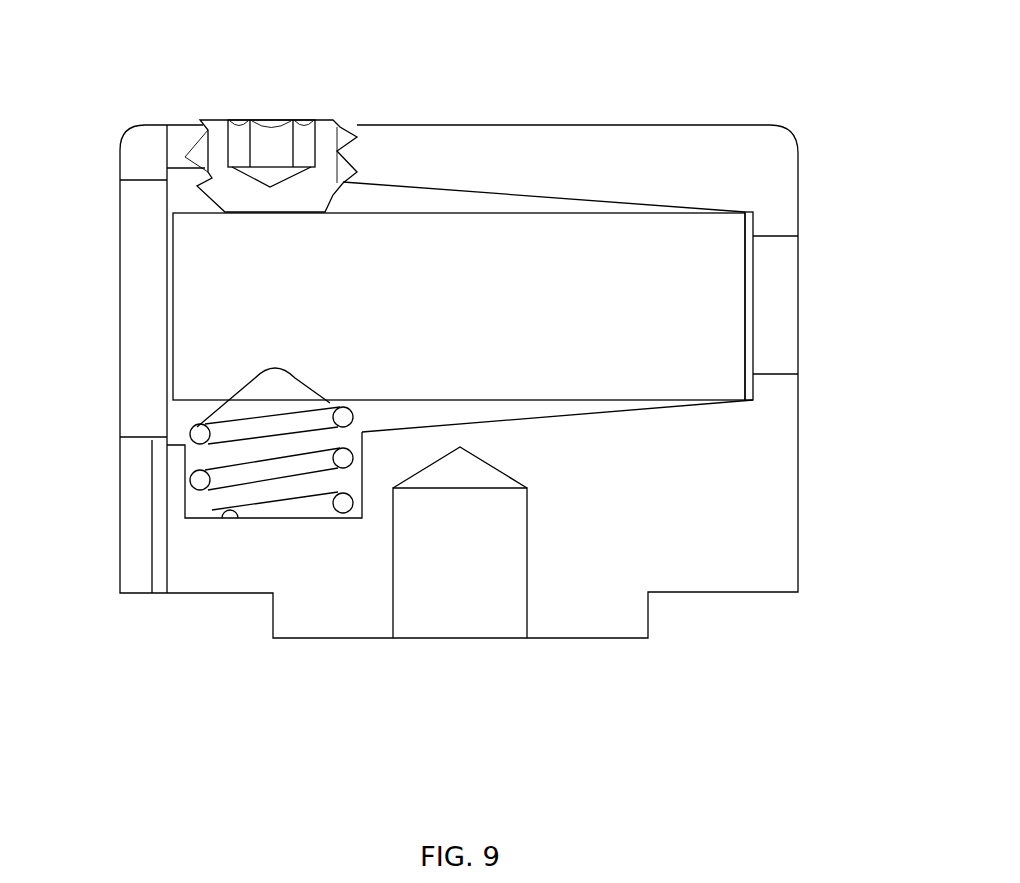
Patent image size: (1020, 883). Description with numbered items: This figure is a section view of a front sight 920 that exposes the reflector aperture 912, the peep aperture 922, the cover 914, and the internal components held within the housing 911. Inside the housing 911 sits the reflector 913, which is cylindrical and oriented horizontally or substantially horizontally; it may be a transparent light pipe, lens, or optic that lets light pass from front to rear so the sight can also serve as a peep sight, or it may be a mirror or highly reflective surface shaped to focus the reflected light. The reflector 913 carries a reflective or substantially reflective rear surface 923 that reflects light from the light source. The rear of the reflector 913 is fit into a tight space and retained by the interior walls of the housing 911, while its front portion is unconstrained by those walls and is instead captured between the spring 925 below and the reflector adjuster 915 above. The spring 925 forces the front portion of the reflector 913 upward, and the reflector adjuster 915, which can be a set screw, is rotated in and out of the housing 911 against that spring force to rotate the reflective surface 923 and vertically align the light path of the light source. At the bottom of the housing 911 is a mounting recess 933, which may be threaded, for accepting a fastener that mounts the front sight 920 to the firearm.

The plunger assembly 920 is at (59, 62).
The housing 911 is at (679, 537).
The reflector aperture 912 is at (800, 317).
The reflector 913 is at (655, 280).
The cover 914 is at (142, 502).
The reflector adjuster 915 is at (273, 145).
The peep aperture 922 is at (120, 317).
The reflective rear surface 923 is at (753, 380).
The spring 925 is at (245, 472).
The mounting recess 933 is at (458, 585).